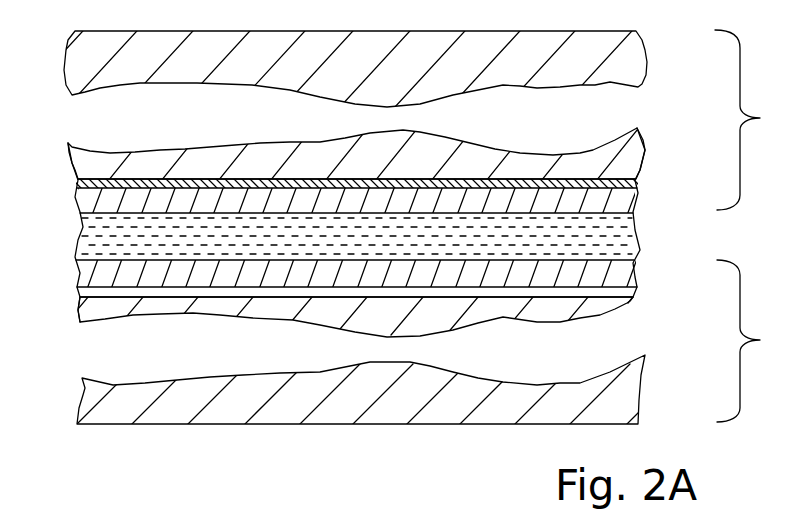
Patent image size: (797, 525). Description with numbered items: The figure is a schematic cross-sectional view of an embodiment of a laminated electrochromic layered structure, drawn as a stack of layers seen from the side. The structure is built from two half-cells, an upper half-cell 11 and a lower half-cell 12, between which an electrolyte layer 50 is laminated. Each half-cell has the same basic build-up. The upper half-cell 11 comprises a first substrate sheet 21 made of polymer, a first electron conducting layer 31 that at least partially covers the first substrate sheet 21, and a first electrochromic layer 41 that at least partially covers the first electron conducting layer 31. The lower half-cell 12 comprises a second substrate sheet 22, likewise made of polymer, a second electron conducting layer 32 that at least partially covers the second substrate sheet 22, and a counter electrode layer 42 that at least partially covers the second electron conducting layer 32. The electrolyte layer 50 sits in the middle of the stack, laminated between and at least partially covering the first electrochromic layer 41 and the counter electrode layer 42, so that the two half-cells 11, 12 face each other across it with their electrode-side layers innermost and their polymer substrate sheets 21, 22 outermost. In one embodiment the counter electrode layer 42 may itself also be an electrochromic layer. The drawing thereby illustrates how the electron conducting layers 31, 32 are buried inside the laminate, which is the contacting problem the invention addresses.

The upper half-cell 11 is at (756, 120).
The lower half-cell 12 is at (757, 341).
The first substrate sheet 21 is at (636, 70).
The second substrate sheet 22 is at (630, 303).
The first electron conducting layer 31 is at (84, 183).
The second electron conducting layer 32 is at (84, 293).
The first electrochromic layer 41 is at (630, 200).
The counter electrode layer 42 is at (633, 270).
The electrolyte layer 50 is at (84, 237).